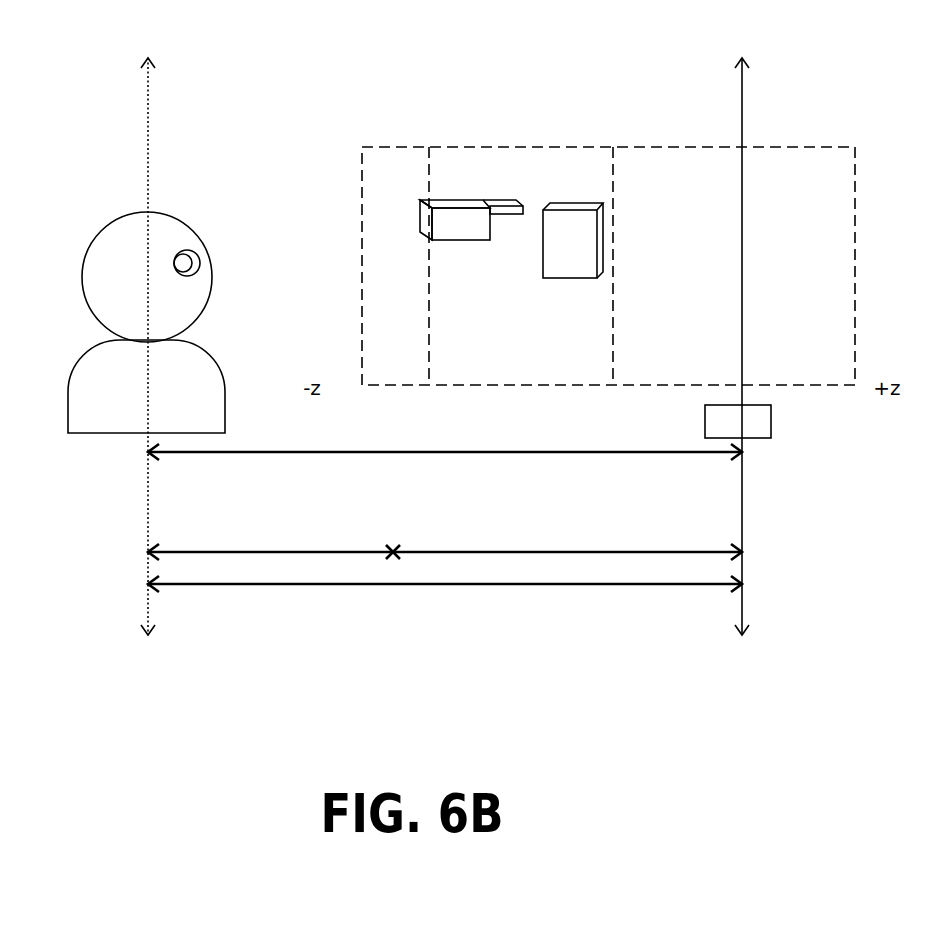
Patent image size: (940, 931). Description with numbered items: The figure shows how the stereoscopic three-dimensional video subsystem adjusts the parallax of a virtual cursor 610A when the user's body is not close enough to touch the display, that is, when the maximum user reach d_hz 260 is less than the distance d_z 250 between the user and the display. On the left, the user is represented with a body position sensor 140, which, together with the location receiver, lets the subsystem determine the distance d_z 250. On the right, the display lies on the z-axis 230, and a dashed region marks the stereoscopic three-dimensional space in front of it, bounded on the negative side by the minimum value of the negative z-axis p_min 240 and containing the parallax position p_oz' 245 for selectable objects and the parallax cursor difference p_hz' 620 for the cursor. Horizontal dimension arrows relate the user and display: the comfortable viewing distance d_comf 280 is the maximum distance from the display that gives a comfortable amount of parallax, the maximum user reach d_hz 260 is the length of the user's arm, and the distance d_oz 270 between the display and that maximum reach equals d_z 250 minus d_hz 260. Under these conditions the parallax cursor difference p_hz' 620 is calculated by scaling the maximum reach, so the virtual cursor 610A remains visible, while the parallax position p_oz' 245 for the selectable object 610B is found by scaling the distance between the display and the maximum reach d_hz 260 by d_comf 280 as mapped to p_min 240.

The body position sensor 140 is at (146, 322).
The z-axis 230 is at (837, 387).
The minimum value of the negative z-axis p_min 240 is at (360, 353).
The parallax position p_oz' 245 is at (612, 304).
The parallax cursor difference p_hz' 620 is at (428, 284).
The virtual cursor 610A is at (471, 195).
The selectable object 610B is at (576, 197).
The comfortable viewing distance d_comf 280 is at (445, 452).
The maximum user reach d_hz 260 is at (274, 552).
The distance d_oz 270 is at (567, 552).
The distance d_z 250 is at (445, 583).